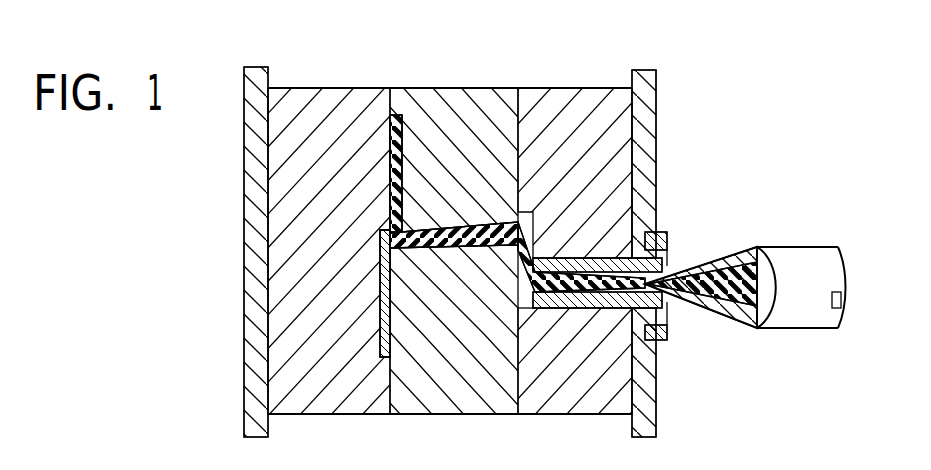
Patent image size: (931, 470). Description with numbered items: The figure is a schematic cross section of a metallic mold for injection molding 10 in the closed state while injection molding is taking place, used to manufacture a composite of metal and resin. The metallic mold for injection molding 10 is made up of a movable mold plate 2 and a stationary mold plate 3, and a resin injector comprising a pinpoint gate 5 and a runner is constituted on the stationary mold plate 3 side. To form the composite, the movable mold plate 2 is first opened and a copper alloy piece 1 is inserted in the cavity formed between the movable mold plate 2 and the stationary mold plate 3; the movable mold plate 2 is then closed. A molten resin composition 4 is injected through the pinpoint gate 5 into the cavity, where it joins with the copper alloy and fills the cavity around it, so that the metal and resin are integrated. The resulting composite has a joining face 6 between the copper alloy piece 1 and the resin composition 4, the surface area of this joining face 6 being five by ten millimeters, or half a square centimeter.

The metallic mold for injection molding 10 is at (553, 87).
The copper alloy piece 1 is at (383, 321).
The movable mold plate 2 is at (339, 96).
The stationary mold plate 3 is at (469, 92).
The resin composition 4 is at (403, 160).
The pinpoint gate 5 is at (448, 229).
The joining face 6 is at (382, 237).